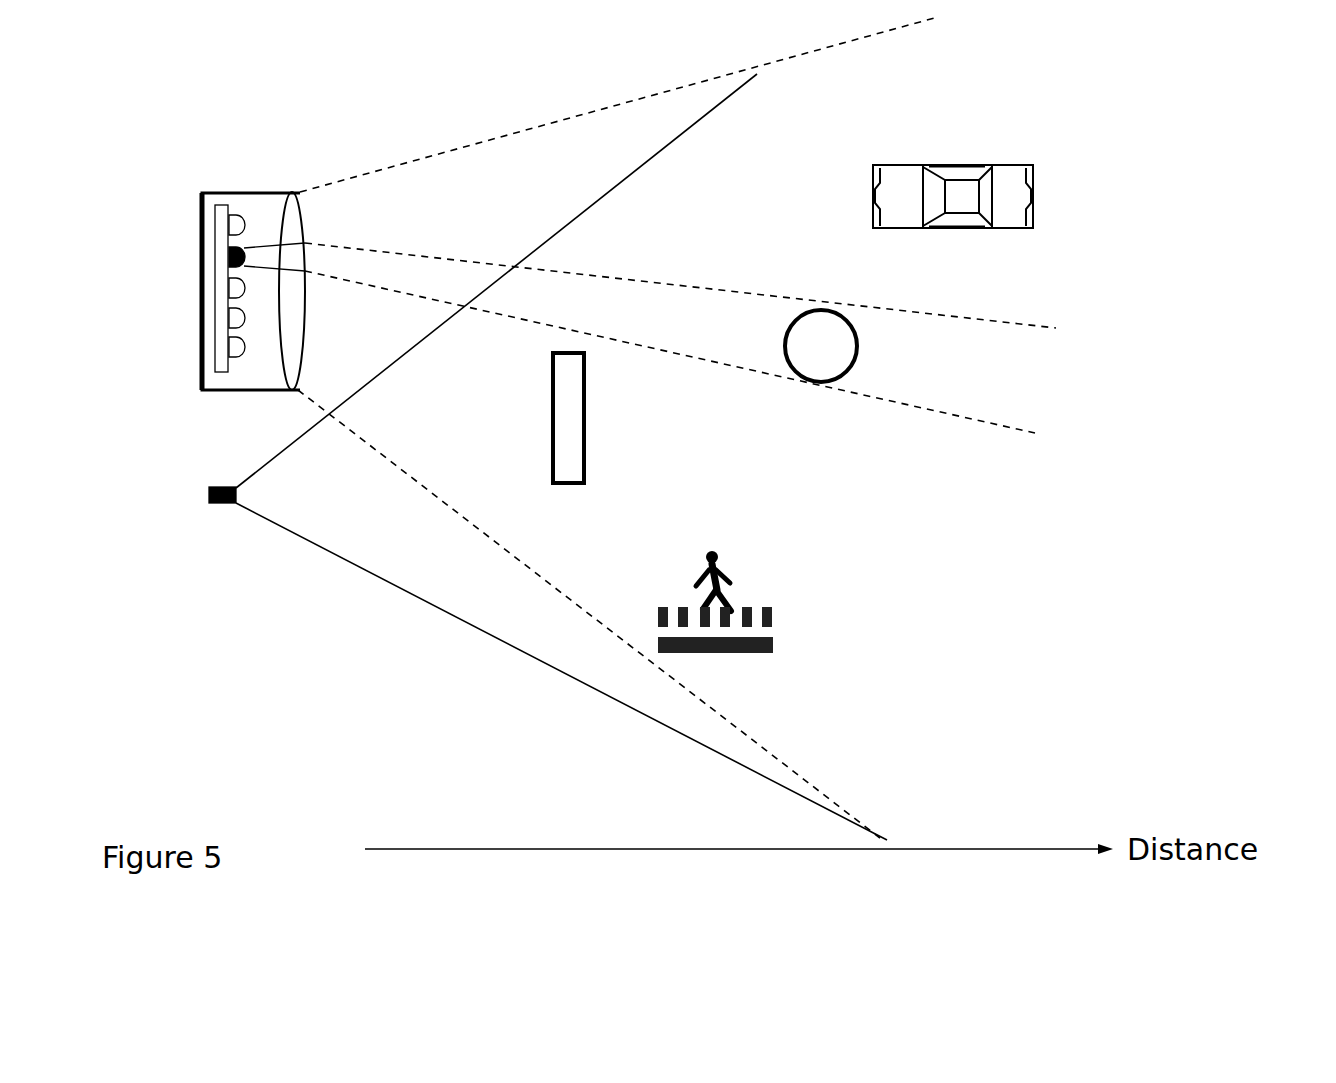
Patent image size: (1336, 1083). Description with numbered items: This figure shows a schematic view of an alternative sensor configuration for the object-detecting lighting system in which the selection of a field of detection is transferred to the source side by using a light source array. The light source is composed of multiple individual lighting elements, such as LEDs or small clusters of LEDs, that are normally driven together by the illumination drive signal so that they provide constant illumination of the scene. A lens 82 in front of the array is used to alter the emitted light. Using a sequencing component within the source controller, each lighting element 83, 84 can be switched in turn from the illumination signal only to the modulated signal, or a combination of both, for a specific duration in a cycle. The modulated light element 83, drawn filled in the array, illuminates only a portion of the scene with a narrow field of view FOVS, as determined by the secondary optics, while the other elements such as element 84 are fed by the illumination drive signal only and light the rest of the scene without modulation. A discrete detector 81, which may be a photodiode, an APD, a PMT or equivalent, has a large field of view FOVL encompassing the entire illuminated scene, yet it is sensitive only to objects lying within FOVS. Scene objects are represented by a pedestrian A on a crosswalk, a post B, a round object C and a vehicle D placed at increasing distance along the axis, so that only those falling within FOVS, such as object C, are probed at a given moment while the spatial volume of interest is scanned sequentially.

The discrete detector 81 is at (209, 495).
The lens 82 is at (286, 384).
The modulated light element 83 is at (230, 252).
The lighting element 84 is at (227, 320).
The pedestrian at crosswalk A is at (733, 583).
The object B is at (585, 400).
The object C is at (858, 352).
The vehicle D is at (1033, 197).
The large field of view FOVL is at (520, 648).
The narrow field of view FOVS is at (700, 285).